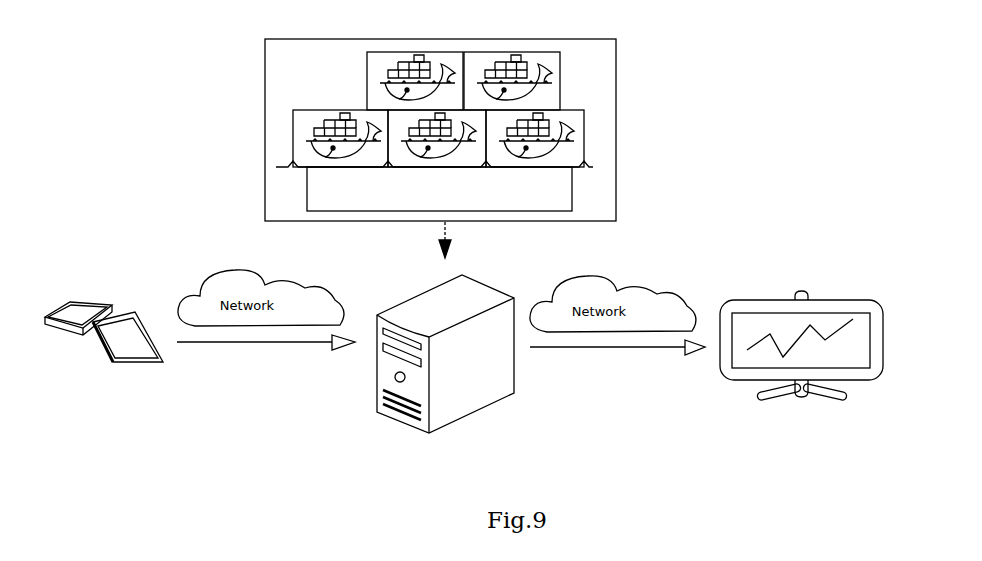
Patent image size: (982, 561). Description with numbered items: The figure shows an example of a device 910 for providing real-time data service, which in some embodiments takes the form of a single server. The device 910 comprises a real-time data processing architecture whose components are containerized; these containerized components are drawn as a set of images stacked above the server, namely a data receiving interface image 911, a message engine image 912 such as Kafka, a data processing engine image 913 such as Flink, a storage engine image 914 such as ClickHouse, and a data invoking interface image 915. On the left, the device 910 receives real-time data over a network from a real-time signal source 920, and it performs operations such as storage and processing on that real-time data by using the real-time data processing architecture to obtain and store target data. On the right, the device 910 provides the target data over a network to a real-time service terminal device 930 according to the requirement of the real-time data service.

The device 910 is at (484, 283).
The data receiving interface image 911 is at (367, 95).
The message engine image 912 is at (561, 86).
The data processing engine image 913 is at (503, 166).
The storage engine image 914 is at (428, 167).
The data invoking interface image 915 is at (333, 150).
The real-time signal source 920 is at (105, 295).
The real-time service terminal device 930 is at (830, 303).